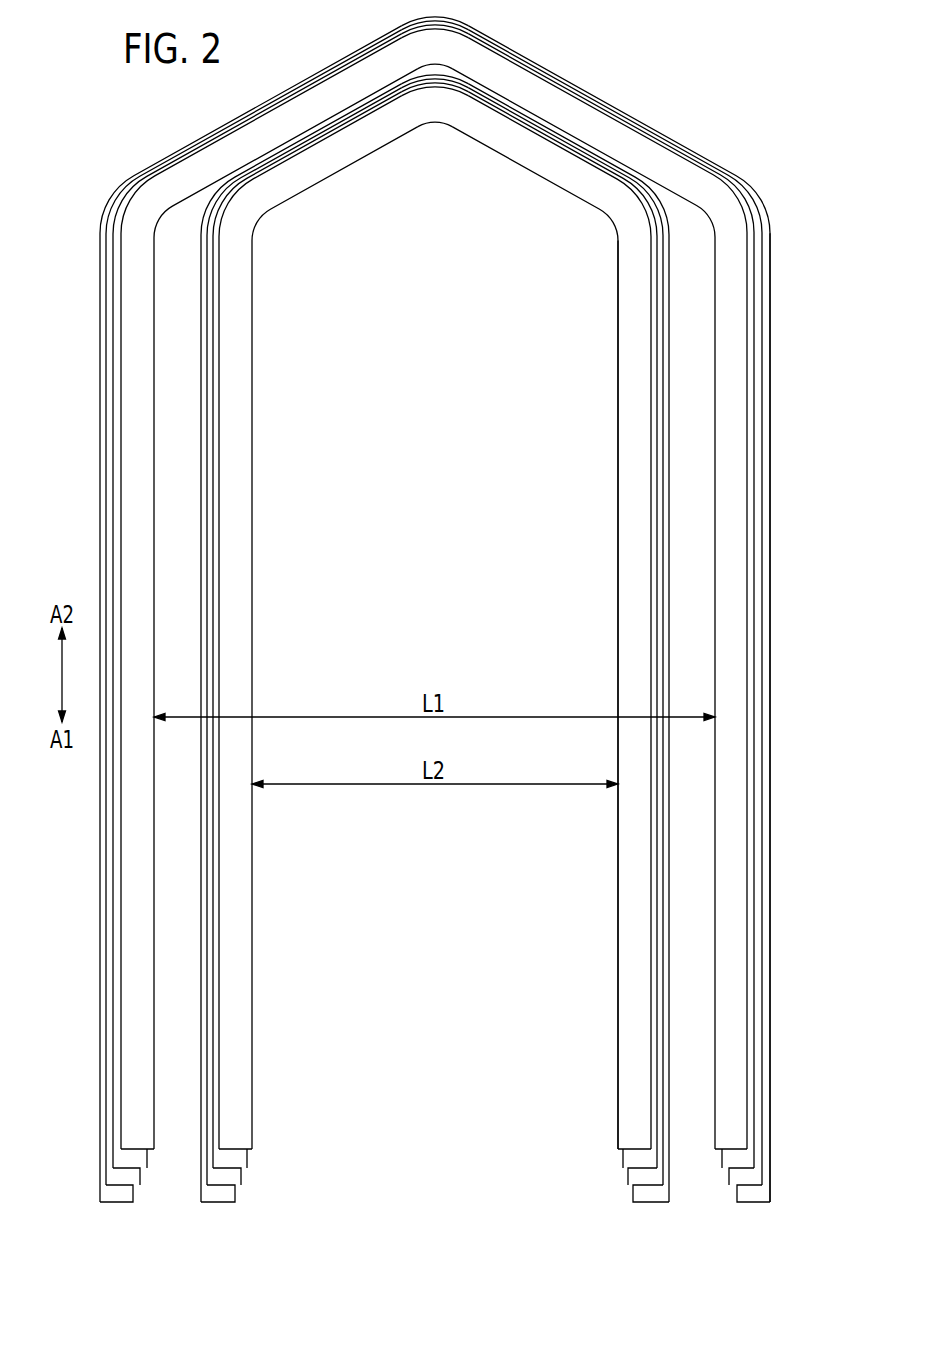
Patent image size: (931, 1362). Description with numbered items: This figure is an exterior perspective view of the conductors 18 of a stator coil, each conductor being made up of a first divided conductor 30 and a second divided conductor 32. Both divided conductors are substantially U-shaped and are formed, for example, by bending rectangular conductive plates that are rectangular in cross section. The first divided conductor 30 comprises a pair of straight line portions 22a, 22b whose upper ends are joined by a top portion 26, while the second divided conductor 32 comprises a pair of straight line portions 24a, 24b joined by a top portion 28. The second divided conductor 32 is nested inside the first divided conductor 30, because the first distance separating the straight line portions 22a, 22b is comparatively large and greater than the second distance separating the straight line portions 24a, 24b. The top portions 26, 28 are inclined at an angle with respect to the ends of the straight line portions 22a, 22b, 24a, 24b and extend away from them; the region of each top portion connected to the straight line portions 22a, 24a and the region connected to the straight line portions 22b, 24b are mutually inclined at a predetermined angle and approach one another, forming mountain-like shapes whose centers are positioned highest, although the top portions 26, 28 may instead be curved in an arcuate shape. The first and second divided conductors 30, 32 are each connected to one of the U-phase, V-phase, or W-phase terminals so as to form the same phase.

The conductor 18 is at (593, 73).
The straight line portion 22a is at (137, 475).
The straight line portion 22b is at (737, 545).
The straight line portion 24a is at (235, 473).
The straight line portion 24b is at (628, 478).
The top portion 26 is at (480, 58).
The top portion 28 is at (433, 105).
The first divided conductor 30 is at (772, 362).
The second divided conductor 32 is at (617, 395).